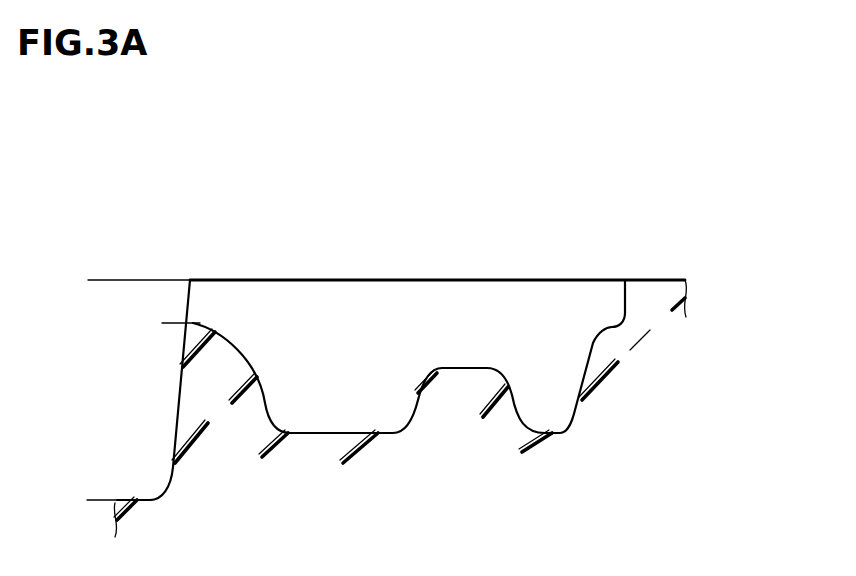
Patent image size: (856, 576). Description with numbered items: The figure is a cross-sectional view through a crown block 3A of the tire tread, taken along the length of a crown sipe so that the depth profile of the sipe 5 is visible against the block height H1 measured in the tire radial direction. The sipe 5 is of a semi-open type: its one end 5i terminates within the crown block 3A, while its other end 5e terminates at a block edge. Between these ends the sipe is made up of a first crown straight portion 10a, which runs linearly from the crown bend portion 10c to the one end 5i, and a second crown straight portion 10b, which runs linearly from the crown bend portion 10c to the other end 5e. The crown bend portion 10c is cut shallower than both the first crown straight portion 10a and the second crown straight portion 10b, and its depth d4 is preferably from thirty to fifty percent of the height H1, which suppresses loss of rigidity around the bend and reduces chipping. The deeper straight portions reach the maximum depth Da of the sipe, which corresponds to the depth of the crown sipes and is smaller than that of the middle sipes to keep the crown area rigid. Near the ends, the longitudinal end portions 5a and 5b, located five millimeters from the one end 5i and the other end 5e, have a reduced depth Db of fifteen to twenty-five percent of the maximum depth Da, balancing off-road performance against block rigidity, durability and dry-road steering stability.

The crown block 3A is at (348, 275).
The longitudinal end portion of sipe 5a is at (210, 273).
The longitudinal end portion of sipe 5b is at (607, 277).
The other end of sipe 5e is at (190, 280).
The one end of sipe 5i is at (625, 280).
The sipe 5 is at (593, 202).
The first crown straight portion 10a is at (540, 337).
The second crown straight portion 10b is at (380, 320).
The crown bend portion 10c is at (488, 327).
The height of crown block H1 is at (93, 280).
The depth of end portions Db is at (169, 280).
The maximum depth of sipe Da is at (328, 280).
The depth of crown bend portion d4 is at (465, 280).